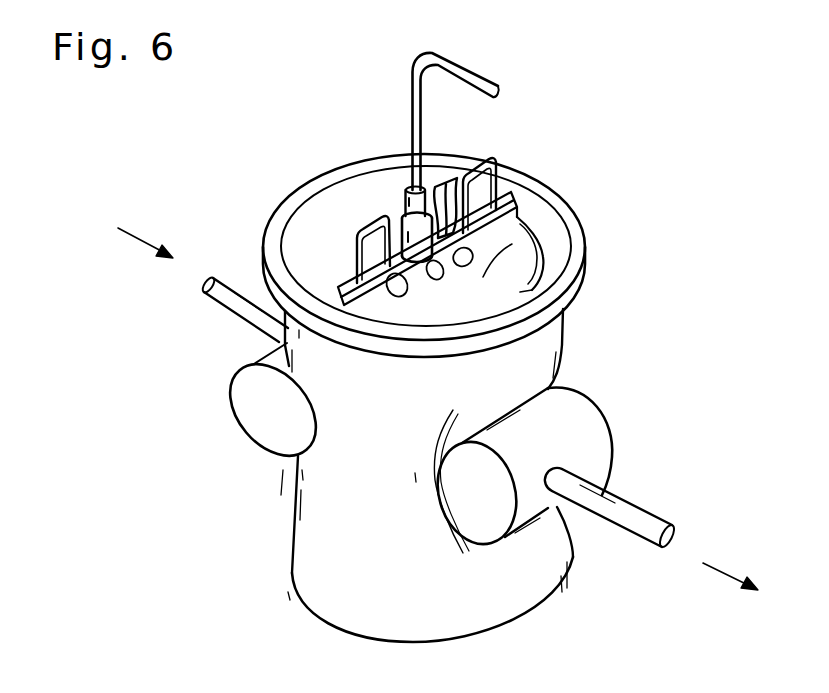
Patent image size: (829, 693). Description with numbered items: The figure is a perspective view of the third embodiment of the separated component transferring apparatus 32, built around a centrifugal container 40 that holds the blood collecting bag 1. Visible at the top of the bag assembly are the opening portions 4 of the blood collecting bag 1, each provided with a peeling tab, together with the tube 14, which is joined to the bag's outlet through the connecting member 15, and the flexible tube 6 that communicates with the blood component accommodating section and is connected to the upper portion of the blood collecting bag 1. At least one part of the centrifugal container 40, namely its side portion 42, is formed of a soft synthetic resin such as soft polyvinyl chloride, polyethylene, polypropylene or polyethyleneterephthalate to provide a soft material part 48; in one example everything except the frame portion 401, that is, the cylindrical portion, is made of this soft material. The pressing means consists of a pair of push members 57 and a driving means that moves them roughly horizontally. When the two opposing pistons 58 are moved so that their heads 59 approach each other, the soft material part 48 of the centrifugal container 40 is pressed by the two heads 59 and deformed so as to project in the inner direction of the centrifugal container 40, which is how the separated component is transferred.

The blood collecting bag 1 is at (638, 188).
The opening portion 4 is at (368, 247).
The flexible tube 6 is at (463, 158).
The tube 14 is at (412, 105).
The connecting member 15 is at (405, 210).
The separated component transferring apparatus 32 is at (704, 157).
The centrifugal container 40 is at (527, 350).
The side portion 42 is at (350, 493).
The soft material part 48 is at (323, 432).
The push member 57 is at (238, 325).
The piston 58 is at (627, 508).
The head 59 is at (253, 410).
The frame portion 401 is at (572, 258).